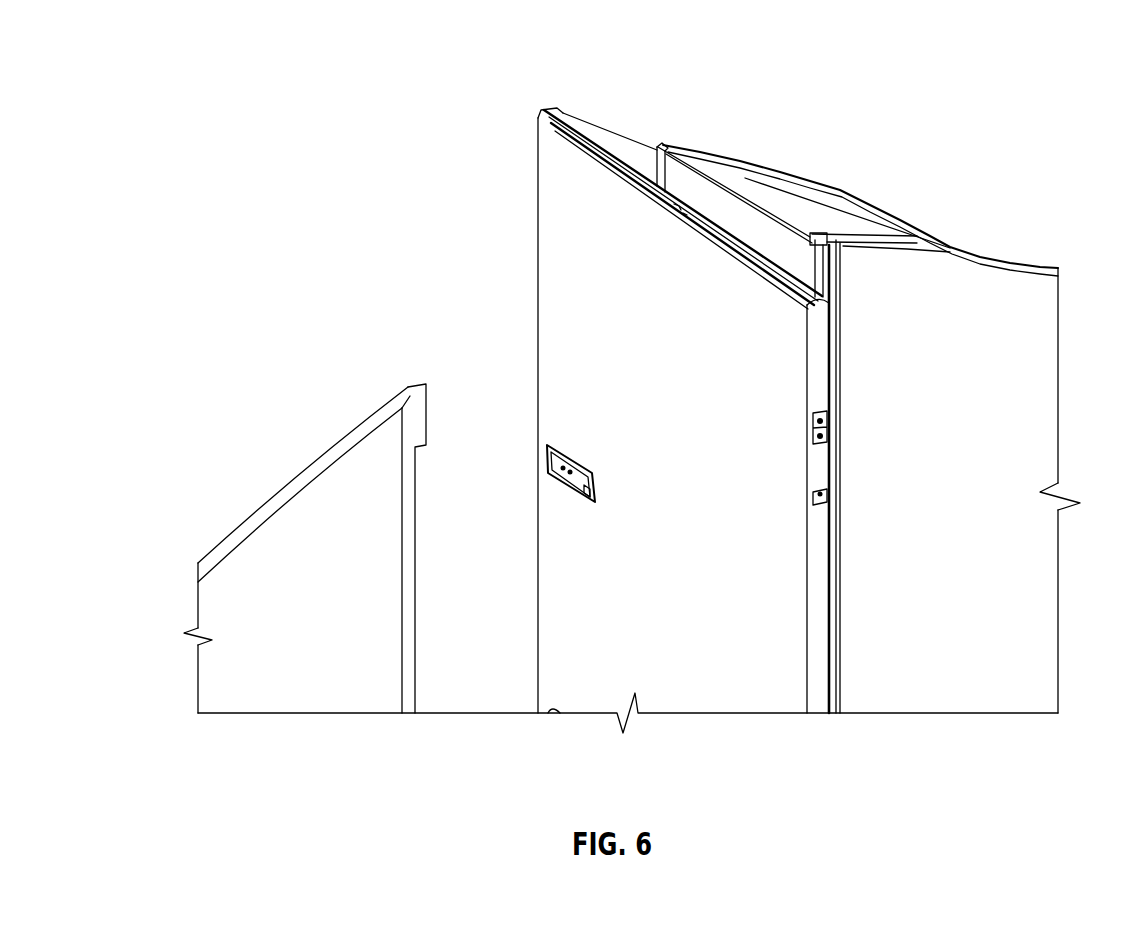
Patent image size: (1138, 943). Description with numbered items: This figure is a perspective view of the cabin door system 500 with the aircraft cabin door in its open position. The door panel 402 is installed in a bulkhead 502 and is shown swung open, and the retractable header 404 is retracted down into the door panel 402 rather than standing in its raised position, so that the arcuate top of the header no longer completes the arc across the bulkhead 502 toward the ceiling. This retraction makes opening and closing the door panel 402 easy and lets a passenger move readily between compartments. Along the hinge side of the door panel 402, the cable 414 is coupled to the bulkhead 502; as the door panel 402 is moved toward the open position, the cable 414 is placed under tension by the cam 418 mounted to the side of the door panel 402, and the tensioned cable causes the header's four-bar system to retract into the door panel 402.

The cabin door system 500 is at (286, 57).
The door panel 402 is at (707, 697).
The retractable header 404 is at (617, 163).
The cable 414 is at (828, 430).
The cam 418 is at (817, 650).
The bulkhead 502 is at (1040, 615).